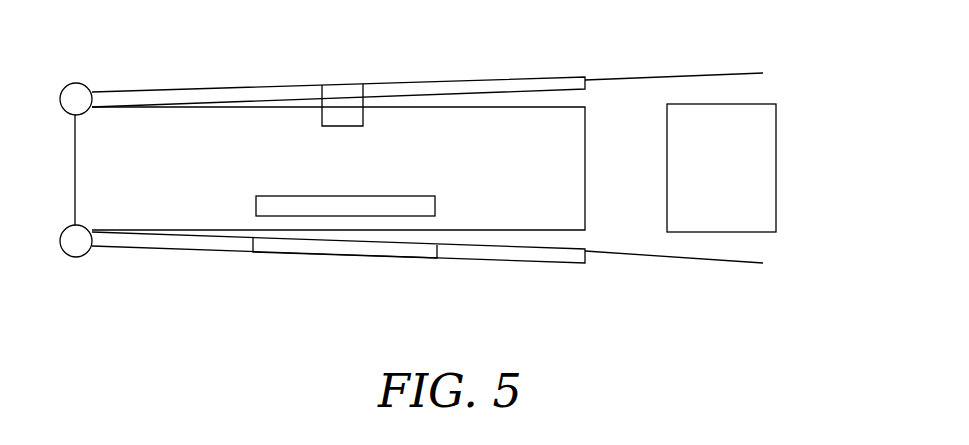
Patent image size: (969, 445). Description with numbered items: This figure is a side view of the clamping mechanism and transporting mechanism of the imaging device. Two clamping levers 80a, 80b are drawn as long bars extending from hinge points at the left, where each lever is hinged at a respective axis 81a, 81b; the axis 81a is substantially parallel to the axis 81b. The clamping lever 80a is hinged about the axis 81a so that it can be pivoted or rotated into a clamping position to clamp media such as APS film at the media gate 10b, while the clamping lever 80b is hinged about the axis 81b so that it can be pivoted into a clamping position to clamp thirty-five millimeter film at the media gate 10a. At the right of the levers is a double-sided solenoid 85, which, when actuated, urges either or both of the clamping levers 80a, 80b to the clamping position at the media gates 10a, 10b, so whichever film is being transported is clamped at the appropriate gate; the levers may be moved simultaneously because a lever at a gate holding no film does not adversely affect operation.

The media gate 10a is at (350, 247).
The media gate 10b is at (349, 88).
The clamping lever 80a is at (573, 76).
The clamping lever 80b is at (542, 257).
The axis 81a is at (73, 100).
The axis 81b is at (75, 242).
The double-sided solenoid 85 is at (776, 180).